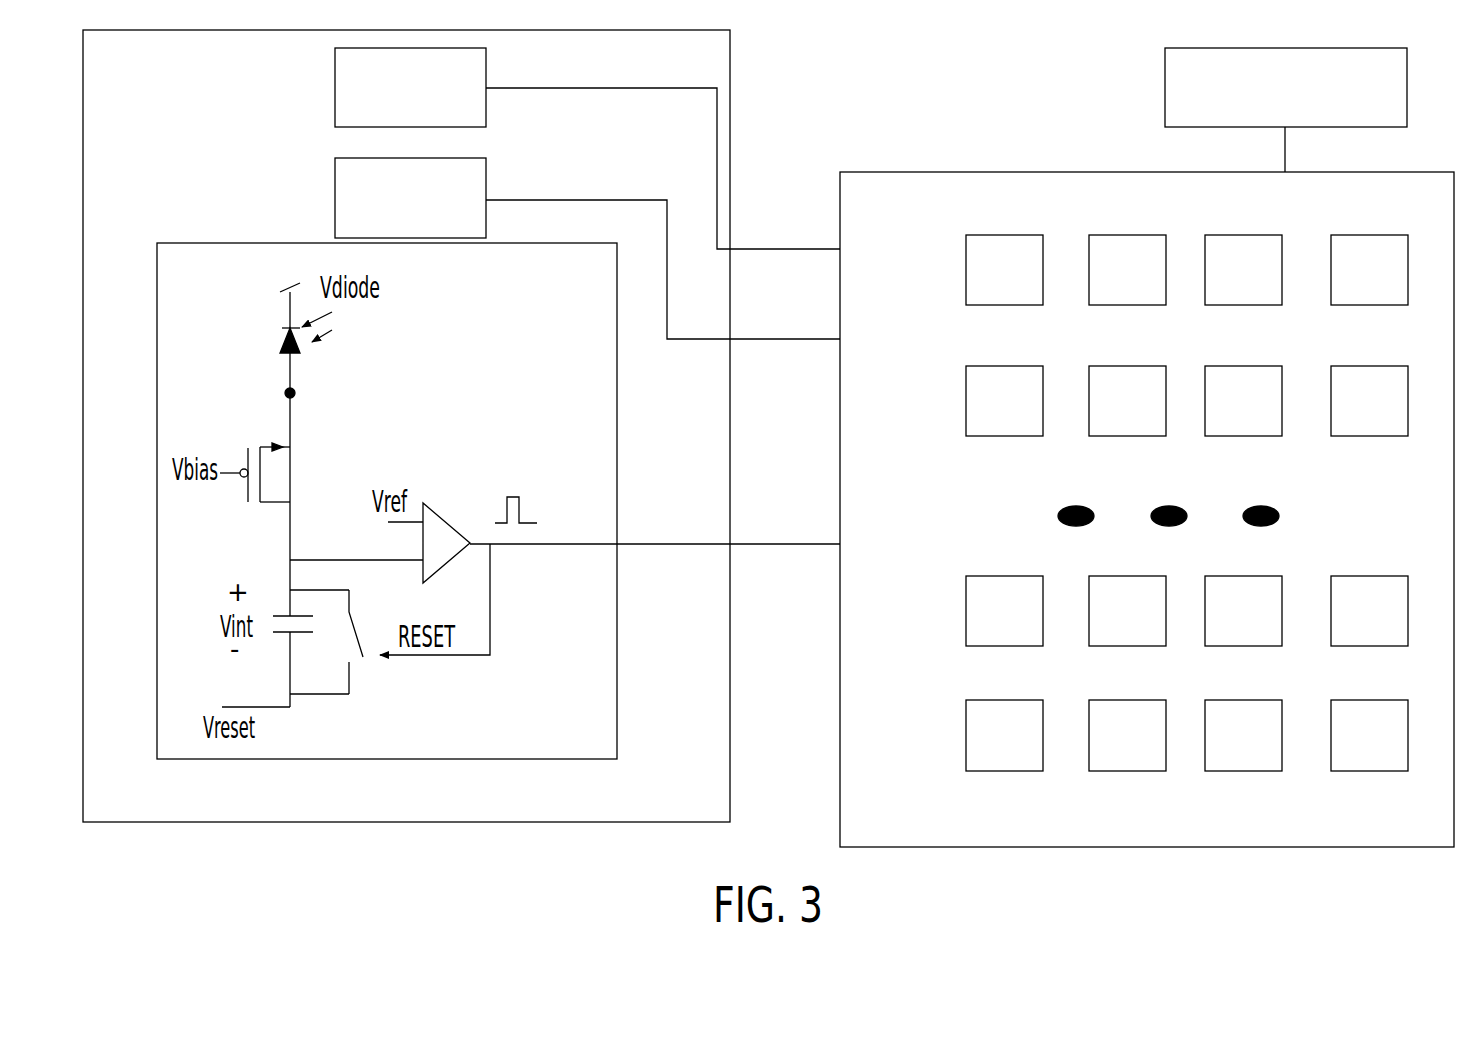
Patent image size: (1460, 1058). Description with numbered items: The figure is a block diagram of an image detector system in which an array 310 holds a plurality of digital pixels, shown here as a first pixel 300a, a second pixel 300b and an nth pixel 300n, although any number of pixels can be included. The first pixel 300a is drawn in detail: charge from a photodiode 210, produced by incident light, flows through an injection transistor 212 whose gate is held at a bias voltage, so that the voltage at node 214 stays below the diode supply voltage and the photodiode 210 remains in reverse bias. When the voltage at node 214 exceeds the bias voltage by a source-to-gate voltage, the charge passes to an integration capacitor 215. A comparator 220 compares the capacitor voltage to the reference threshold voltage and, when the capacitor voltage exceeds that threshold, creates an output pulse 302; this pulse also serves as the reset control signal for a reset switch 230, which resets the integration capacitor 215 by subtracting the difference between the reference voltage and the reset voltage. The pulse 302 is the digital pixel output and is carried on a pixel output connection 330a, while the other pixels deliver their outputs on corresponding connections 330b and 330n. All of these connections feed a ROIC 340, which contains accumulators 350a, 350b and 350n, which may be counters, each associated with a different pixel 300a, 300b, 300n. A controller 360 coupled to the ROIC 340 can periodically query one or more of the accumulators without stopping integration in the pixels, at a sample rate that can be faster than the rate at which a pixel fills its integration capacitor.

The photodiode 210 is at (284, 343).
The injection transistor 212 is at (247, 450).
The node 214 is at (285, 392).
The integration capacitor 215 is at (287, 613).
The comparator 220 is at (445, 517).
The reset switch 230 is at (350, 673).
The output pulse 302 is at (517, 490).
The first pixel 300a is at (470, 350).
The second pixel 300b is at (430, 218).
The nth pixel 300n is at (430, 108).
The array 310 is at (731, 734).
The pixel output connection 330a is at (688, 547).
The pixel output connection 330b is at (701, 343).
The pixel output connection 330n is at (638, 92).
The ROIC 340 is at (1047, 172).
The first accumulator 350a is at (1027, 287).
The second accumulator 350b is at (1150, 287).
The nth accumulator 350n is at (1395, 754).
The controller 360 is at (1290, 102).